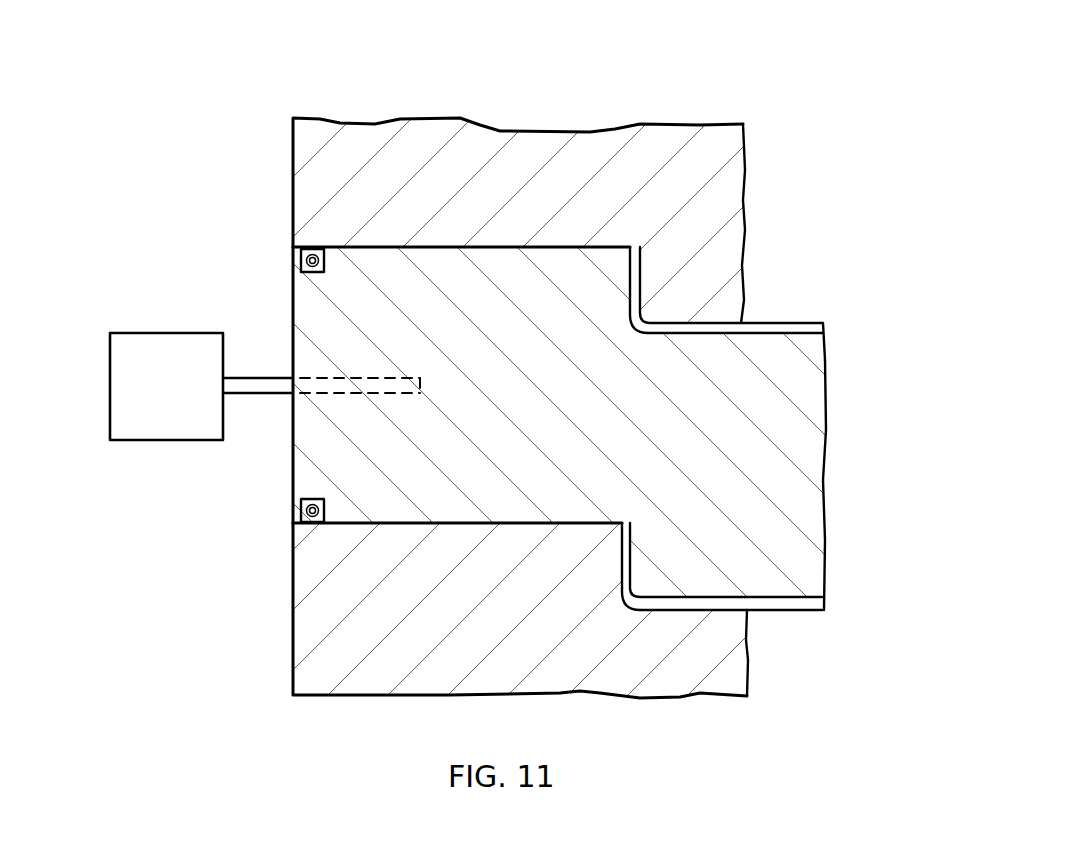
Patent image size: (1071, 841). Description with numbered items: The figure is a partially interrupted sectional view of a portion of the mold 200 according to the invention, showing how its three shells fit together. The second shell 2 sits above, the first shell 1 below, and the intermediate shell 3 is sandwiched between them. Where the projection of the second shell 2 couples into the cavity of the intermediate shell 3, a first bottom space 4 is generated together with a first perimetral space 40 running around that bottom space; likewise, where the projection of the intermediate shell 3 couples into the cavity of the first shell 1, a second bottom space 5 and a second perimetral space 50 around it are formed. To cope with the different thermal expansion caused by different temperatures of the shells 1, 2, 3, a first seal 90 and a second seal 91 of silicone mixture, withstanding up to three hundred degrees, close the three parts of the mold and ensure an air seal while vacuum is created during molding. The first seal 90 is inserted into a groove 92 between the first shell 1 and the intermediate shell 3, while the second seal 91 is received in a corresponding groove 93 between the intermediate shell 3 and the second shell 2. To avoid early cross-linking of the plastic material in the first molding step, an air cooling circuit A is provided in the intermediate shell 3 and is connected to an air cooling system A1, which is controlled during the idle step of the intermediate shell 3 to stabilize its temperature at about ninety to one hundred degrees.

The first shell 1 is at (352, 638).
The second shell 2 is at (433, 148).
The intermediate shell 3 is at (672, 433).
The first bottom space 4 is at (760, 333).
The second bottom space 5 is at (720, 603).
The first perimetral space 40 is at (638, 280).
The second perimetral space 50 is at (623, 565).
The first seal 90 is at (313, 524).
The second seal 91 is at (300, 256).
The groove 92 is at (298, 510).
The upper sensor holder 93 is at (307, 275).
The mold 200 is at (793, 140).
The air cooling circuit A is at (357, 398).
The air cooling system A1 is at (152, 352).